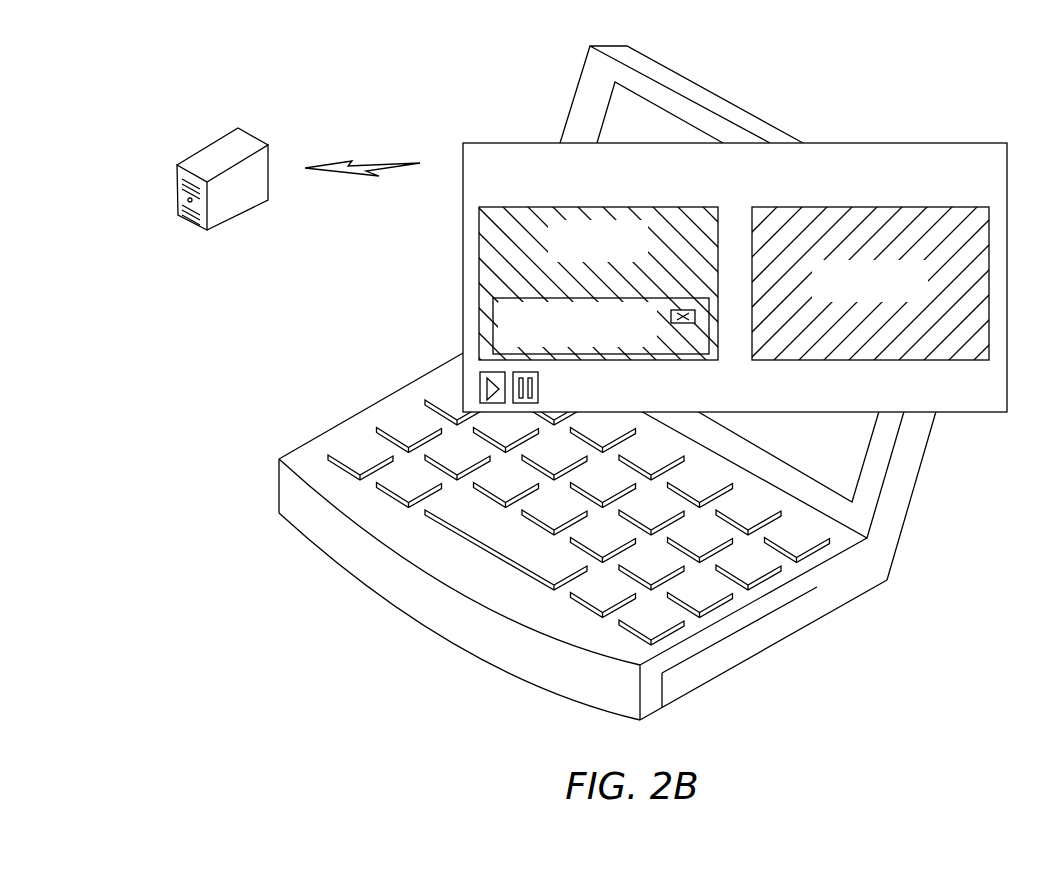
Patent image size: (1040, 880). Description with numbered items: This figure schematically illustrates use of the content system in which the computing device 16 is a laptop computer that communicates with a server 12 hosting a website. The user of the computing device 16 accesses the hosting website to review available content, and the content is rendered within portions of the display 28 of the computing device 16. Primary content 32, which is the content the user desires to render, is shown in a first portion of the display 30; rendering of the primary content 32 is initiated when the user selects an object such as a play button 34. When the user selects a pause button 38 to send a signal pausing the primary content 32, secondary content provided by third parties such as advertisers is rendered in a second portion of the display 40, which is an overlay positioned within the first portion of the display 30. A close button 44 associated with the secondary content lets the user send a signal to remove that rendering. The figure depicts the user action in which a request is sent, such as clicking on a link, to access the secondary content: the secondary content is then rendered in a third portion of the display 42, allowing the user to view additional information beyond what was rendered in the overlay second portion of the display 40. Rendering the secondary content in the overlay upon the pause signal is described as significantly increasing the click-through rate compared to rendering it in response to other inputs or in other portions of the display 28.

The server 12 is at (247, 142).
The computing device 16 is at (663, 66).
The display 28 is at (992, 142).
The first portion of the display 30 is at (593, 291).
The primary content 32 is at (535, 245).
The play button 34 is at (487, 378).
The pause button 38 is at (538, 387).
The second portion of the display 40 is at (615, 357).
The third portion of the display 42 is at (822, 291).
The close button 44 is at (683, 324).